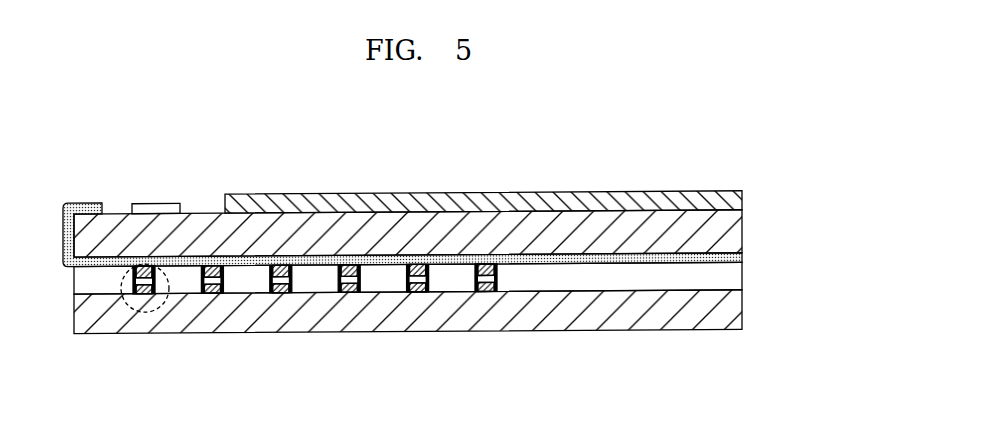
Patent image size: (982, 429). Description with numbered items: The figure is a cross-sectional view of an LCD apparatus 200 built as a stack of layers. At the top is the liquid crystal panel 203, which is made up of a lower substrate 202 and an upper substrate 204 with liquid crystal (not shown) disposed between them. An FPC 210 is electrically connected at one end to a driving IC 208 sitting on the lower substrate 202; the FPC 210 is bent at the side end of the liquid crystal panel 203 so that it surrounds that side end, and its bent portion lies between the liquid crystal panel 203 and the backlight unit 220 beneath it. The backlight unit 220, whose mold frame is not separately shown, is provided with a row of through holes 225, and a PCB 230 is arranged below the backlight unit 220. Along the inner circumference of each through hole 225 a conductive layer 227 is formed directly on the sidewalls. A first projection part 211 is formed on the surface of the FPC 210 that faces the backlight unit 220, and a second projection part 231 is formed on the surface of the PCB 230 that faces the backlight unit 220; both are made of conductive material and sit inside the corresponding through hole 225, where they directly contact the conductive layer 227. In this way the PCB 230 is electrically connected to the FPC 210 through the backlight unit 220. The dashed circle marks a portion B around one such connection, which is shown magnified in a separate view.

The LCD apparatus 200 is at (634, 128).
The liquid crystal panel 203 is at (461, 223).
The upper substrate 204 is at (742, 202).
The lower substrate 202 is at (742, 232).
The FPC 210 is at (86, 204).
The driving IC 208 is at (154, 206).
The backlight unit 220 is at (725, 280).
The PCB 230 is at (725, 305).
The first projection part 211 is at (132, 293).
The second projection part 231 is at (147, 291).
The through hole 225 is at (152, 282).
The conductive layer 227 is at (157, 272).
The portion B is at (142, 310).